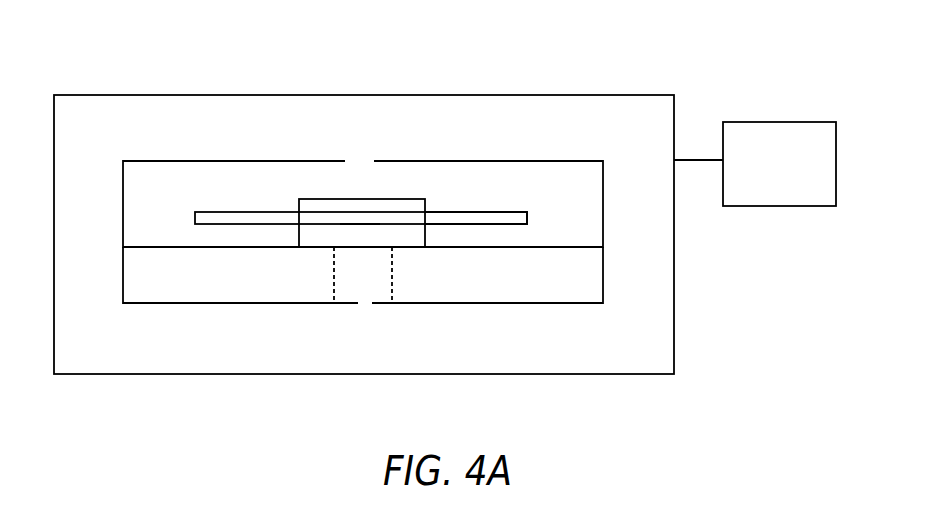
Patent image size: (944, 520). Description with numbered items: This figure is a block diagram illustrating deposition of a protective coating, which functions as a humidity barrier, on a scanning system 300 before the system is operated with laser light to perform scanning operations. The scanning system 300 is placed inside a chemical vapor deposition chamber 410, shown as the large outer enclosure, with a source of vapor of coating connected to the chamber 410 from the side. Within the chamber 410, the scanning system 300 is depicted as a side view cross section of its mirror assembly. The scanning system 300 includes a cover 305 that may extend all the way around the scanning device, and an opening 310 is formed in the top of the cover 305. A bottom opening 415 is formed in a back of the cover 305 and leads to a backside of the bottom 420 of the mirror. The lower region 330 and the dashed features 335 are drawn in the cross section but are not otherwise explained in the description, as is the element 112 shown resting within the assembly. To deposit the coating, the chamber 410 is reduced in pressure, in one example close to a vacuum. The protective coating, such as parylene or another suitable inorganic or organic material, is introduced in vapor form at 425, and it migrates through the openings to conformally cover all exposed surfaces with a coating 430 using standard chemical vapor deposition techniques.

The scanning system 300 is at (752, 48).
The chemical vapor deposition chamber 410 is at (593, 95).
The cover 305 is at (463, 160).
The opening 310 is at (359, 162).
The base 330 is at (603, 272).
The channels 335 is at (334, 284).
The bottom opening 415 is at (362, 305).
The substrate 112 is at (363, 199).
The protective coating introduced in vapor form 425 is at (213, 211).
The coating 430 is at (479, 212).
The bottom of mirror 420 is at (360, 226).